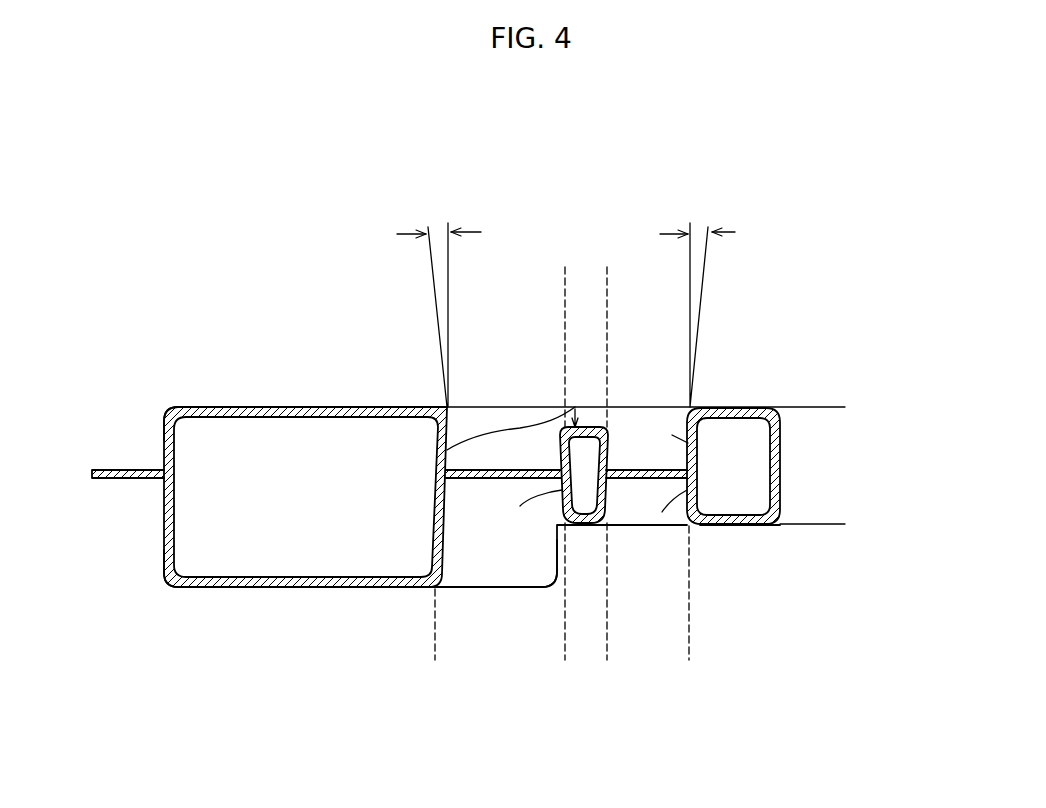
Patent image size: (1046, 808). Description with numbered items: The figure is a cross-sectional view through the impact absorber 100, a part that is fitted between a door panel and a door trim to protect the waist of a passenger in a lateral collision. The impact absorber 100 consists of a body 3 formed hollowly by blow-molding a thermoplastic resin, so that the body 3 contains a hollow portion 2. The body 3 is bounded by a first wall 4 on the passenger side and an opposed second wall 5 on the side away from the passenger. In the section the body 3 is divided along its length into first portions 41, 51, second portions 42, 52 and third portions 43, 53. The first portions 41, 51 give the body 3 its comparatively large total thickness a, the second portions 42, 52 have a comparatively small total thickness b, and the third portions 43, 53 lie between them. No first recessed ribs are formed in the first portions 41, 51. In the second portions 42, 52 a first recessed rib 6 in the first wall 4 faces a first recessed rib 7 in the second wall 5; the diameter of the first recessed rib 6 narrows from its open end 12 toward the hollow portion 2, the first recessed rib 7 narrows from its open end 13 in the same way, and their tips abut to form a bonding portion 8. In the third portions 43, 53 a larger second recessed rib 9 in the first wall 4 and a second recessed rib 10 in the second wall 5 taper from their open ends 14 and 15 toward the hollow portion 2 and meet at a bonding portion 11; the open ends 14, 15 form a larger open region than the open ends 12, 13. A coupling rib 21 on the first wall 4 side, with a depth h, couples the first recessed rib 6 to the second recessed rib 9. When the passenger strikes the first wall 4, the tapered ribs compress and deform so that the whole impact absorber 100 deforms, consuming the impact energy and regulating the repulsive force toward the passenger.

The impact absorber 100 is at (855, 298).
The hollow portion 2 is at (330, 426).
The body 3 is at (165, 530).
The first wall 4 is at (168, 400).
The first portion 41 is at (283, 380).
The second wall 5 is at (178, 592).
The first portion 51 is at (287, 603).
The first recessed rib 6 is at (610, 452).
The first recessed rib 7 is at (607, 492).
The bonding portion 8 is at (648, 471).
The second recessed rib 9 is at (558, 457).
The second recessed rib 10 is at (447, 502).
The bonding portion 11 is at (487, 472).
The open end 12 is at (610, 365).
The open end 13 is at (607, 623).
The open end 14 is at (450, 365).
The open end 15 is at (565, 623).
The coupling rib 21 is at (600, 407).
The second portion 42 is at (723, 320).
The third portion 43 is at (510, 285).
The second portion 52 is at (752, 607).
The third portion 53 is at (515, 603).